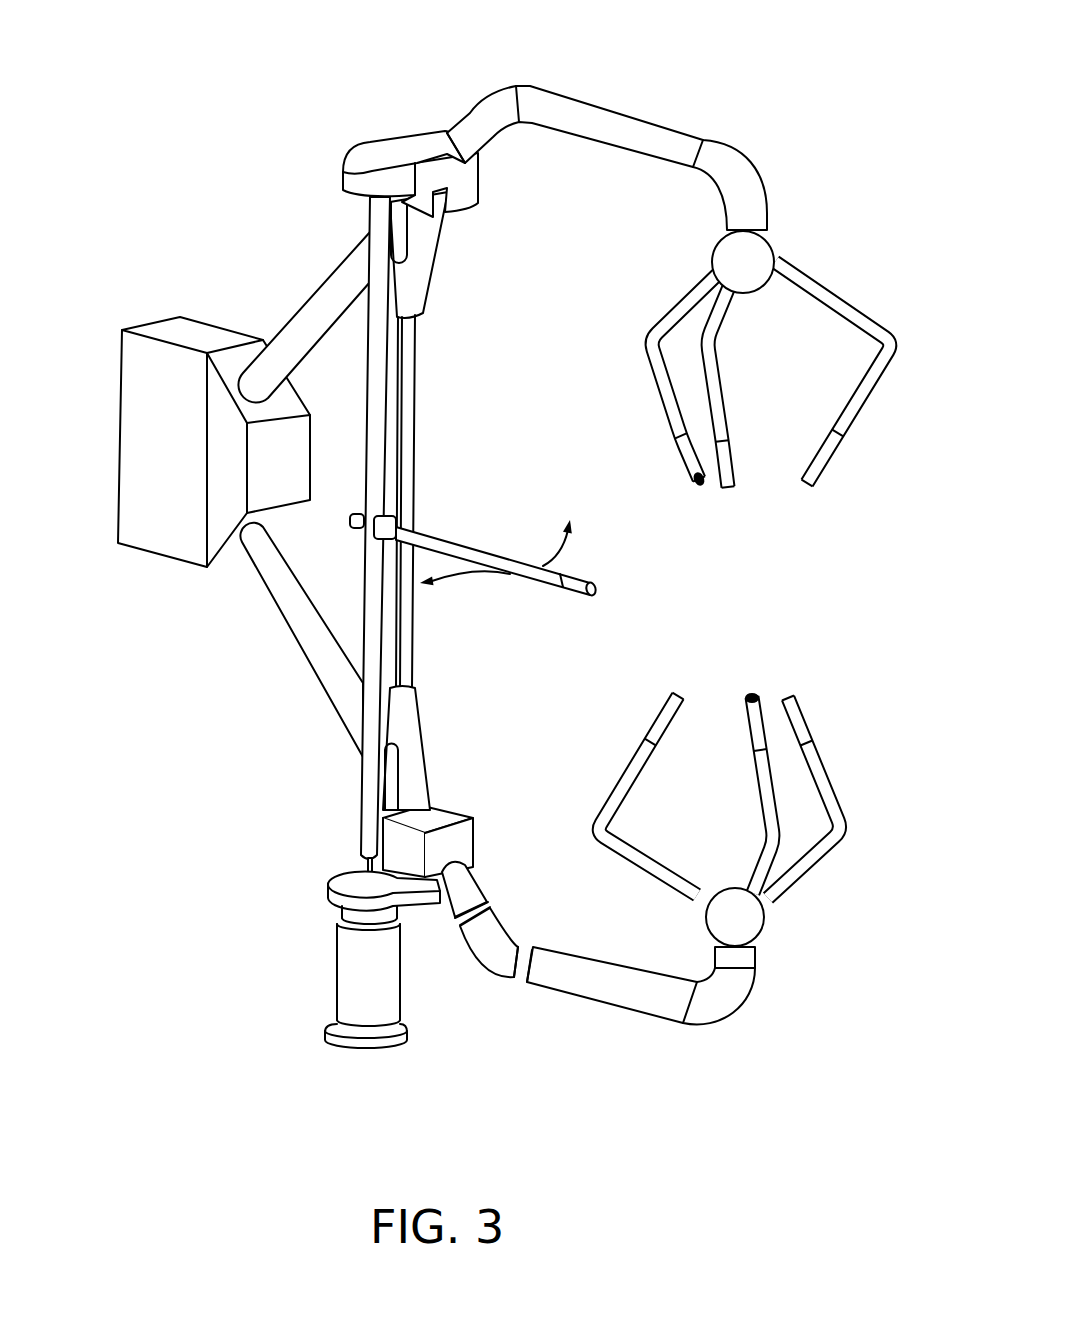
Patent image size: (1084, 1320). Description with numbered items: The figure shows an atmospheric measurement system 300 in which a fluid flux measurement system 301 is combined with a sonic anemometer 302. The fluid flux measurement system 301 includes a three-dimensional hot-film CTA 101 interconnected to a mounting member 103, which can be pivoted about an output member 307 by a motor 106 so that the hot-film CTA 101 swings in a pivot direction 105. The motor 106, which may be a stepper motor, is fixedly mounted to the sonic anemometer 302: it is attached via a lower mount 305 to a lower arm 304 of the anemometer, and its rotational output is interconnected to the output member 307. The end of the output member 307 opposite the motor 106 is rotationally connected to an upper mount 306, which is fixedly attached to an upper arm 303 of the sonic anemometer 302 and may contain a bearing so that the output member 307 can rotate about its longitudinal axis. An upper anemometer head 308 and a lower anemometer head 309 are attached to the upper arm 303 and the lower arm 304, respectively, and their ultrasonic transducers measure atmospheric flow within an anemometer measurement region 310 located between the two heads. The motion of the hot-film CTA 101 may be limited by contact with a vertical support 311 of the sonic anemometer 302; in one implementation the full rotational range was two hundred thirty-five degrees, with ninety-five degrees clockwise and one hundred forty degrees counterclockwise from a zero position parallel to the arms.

The atmospheric measurement system 300 is at (192, 97).
The fluid flux measurement system 301 is at (238, 939).
The sonic anemometer 302 is at (172, 316).
The upper arm 303 is at (632, 110).
The lower arm 304 is at (592, 1000).
The lower mount 305 is at (467, 817).
The upper mount 306 is at (418, 132).
The output member 307 is at (360, 823).
The upper anemometer head 308 is at (800, 244).
The lower anemometer head 309 is at (727, 884).
The anemometer measurement region 310 is at (748, 595).
The vertical support 311 is at (418, 410).
The 3D hot-film CTA 101 is at (583, 577).
The mounting member 103 is at (466, 540).
The pivot direction 105 is at (480, 590).
The motor 106 is at (433, 1020).